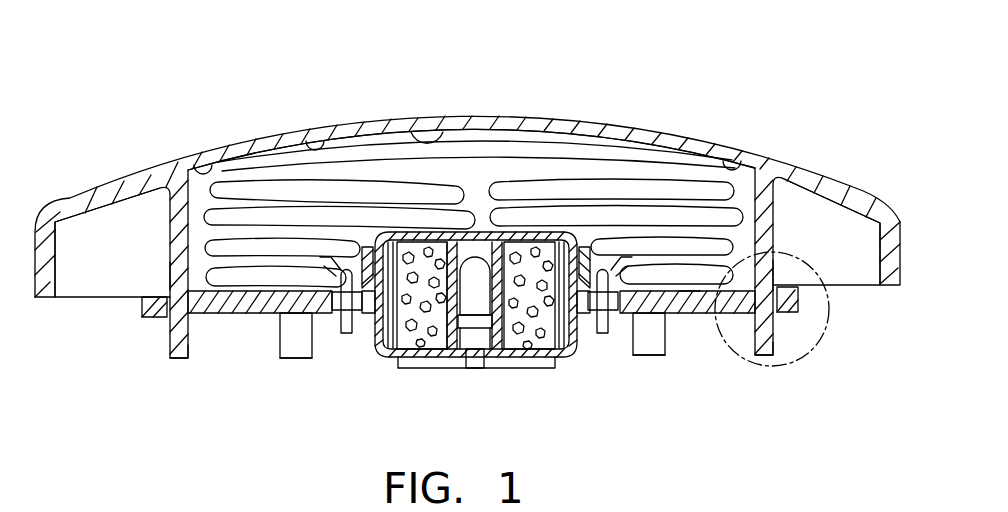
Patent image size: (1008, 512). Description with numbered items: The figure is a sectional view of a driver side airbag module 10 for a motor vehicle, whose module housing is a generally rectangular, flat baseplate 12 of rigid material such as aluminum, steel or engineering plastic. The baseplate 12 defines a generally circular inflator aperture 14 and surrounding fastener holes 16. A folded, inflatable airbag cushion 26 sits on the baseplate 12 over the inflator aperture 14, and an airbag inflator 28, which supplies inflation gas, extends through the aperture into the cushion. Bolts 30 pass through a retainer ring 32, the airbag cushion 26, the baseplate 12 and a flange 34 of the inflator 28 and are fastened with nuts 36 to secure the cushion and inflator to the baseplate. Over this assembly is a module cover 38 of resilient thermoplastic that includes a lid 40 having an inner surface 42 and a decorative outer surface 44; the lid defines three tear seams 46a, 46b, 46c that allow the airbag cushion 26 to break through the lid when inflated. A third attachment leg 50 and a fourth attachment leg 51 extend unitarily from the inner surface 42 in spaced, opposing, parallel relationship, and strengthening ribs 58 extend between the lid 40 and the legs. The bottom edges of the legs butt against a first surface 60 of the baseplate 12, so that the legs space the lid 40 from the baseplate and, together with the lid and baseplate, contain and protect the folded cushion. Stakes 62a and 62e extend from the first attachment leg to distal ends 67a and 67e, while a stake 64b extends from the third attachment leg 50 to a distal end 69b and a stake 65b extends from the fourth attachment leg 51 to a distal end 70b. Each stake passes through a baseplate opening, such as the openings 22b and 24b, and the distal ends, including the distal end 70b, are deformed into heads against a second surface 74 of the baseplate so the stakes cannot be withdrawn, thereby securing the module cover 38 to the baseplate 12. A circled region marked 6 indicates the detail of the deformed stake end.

The driver side airbag module 10 is at (567, 42).
The baseplate 12 is at (153, 325).
The inflator aperture 14 is at (550, 326).
The fastener holes 16 is at (342, 335).
The opening of the third set of openings 22b is at (172, 275).
The opening of the fourth set of openings 24b is at (777, 273).
The airbag cushion 26 is at (671, 166).
The airbag inflator 28 is at (432, 368).
The bolts 30 is at (372, 342).
The retainer ring 32 is at (586, 245).
The flange 34 is at (400, 366).
The nuts 36 is at (366, 290).
The module cover 38 is at (793, 146).
The lid 40 is at (855, 178).
The inner surface 42 is at (410, 143).
The decorative outer surface 44 is at (460, 118).
The tear seam 46a is at (204, 163).
The tear seam 46b is at (309, 133).
The tear seam 46c is at (738, 161).
The third attachment leg 50 is at (167, 203).
The fourth attachment leg 51 is at (774, 207).
The strengthening ribs 58 is at (79, 283).
The first surface 60 is at (687, 280).
The stake 62a is at (277, 340).
The stake 62e is at (667, 333).
The stake 64b is at (170, 345).
The stake 65b is at (752, 347).
The distal end 67a is at (297, 360).
The distal end 67e is at (647, 357).
The distal end 69b is at (183, 360).
The distal end 70b is at (765, 357).
The second surface 74 is at (215, 317).
The detail circle 6 is at (813, 360).